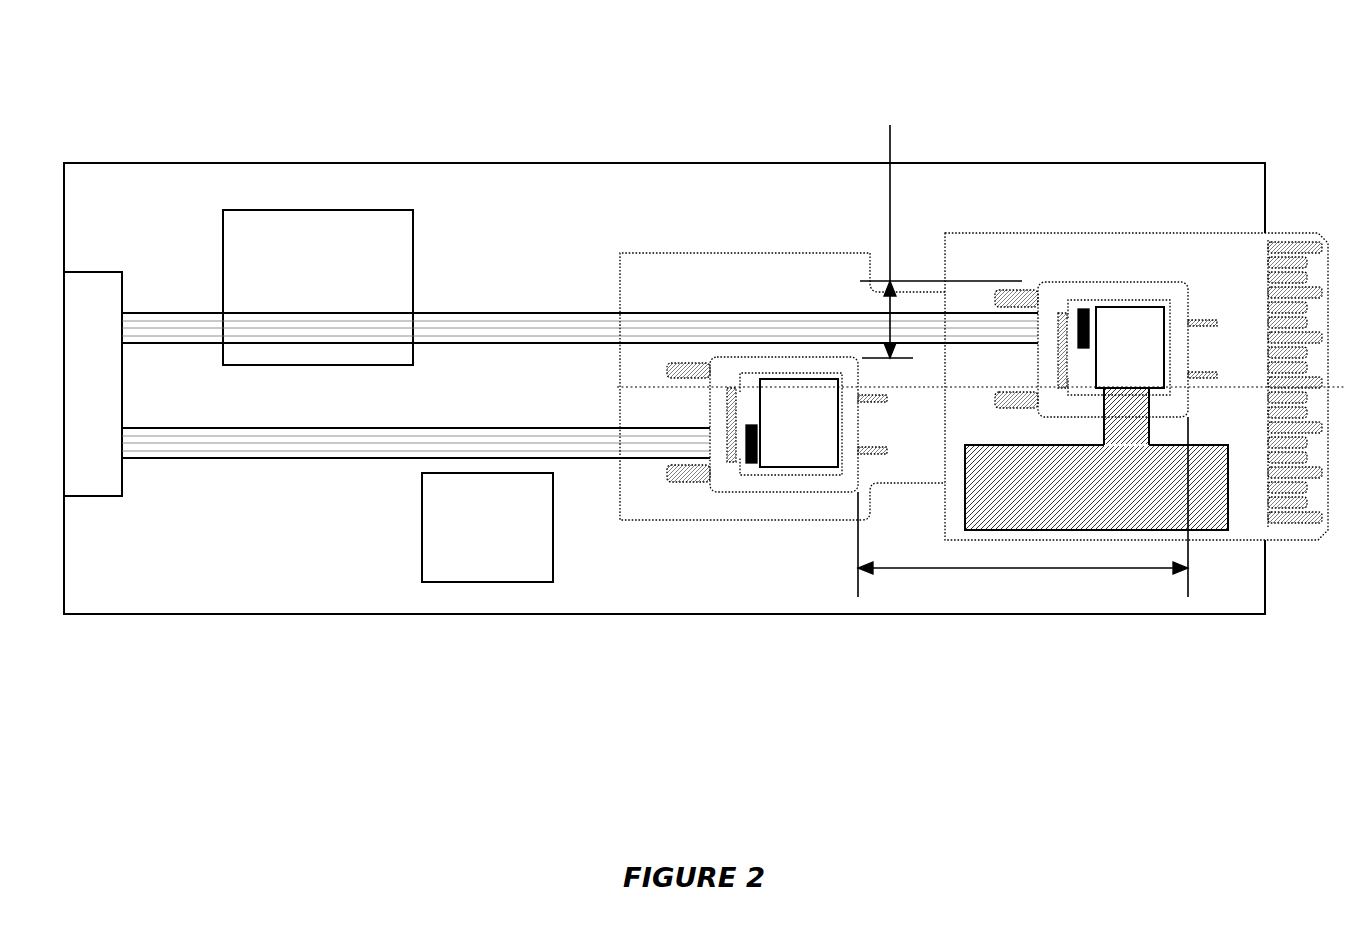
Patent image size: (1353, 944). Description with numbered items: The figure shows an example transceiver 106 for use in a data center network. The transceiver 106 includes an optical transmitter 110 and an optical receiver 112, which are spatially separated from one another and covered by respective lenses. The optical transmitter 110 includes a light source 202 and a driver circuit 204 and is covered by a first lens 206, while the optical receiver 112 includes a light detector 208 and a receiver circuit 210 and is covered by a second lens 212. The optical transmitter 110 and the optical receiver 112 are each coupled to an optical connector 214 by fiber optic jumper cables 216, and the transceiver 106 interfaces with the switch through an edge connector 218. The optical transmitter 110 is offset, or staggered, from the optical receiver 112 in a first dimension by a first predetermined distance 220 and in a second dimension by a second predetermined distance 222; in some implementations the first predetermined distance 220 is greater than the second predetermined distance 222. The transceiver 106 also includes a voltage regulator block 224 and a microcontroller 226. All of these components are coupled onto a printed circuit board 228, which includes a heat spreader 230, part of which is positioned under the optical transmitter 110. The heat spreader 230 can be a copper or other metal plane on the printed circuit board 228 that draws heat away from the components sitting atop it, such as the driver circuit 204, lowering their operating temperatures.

The transceiver 106 is at (673, 108).
The optical transmitter 110 is at (1002, 57).
The optical receiver 112 is at (868, 693).
The light source 202 is at (1083, 309).
The driver circuit 204 is at (1130, 345).
The first lens 206 is at (1185, 292).
The light detector 208 is at (752, 466).
The receiver circuit 210 is at (798, 423).
The second lens 212 is at (710, 493).
The optical connector 214 is at (120, 497).
The fiber optic jumper cables 216 is at (564, 343).
The edge connector 218 is at (1278, 500).
The first predetermined distance 220 is at (941, 225).
The second predetermined distance 222 is at (1025, 568).
The voltage regulator block 224 is at (422, 523).
The microcontroller 226 is at (413, 288).
The printed circuit board 228 is at (139, 163).
The heat spreader 230 is at (1105, 510).